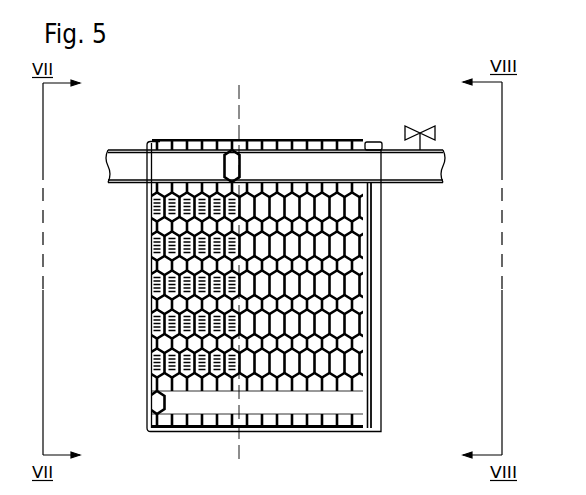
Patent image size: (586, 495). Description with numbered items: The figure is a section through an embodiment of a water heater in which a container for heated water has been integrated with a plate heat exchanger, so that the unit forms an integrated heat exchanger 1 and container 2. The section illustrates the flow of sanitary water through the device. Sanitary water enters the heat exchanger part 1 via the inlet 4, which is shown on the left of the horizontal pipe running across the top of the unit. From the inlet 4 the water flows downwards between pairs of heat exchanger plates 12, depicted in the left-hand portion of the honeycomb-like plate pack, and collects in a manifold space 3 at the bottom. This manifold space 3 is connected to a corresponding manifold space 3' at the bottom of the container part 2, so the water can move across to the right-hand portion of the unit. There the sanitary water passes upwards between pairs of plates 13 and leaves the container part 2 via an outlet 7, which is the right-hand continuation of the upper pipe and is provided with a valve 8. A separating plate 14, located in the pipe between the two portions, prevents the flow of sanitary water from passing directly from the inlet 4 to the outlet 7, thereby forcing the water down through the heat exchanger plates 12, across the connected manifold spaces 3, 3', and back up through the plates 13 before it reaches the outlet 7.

The heat exchanger part 1 is at (197, 130).
The container part 2 is at (301, 128).
The manifold space 3 is at (195, 439).
The manifold space 3' is at (301, 439).
The inlet 4 is at (132, 167).
The outlet 7 is at (378, 165).
The valve 8 is at (433, 128).
The heat exchanger plates 12 is at (155, 262).
The plates 13 is at (337, 260).
The separating plate 14 is at (237, 140).